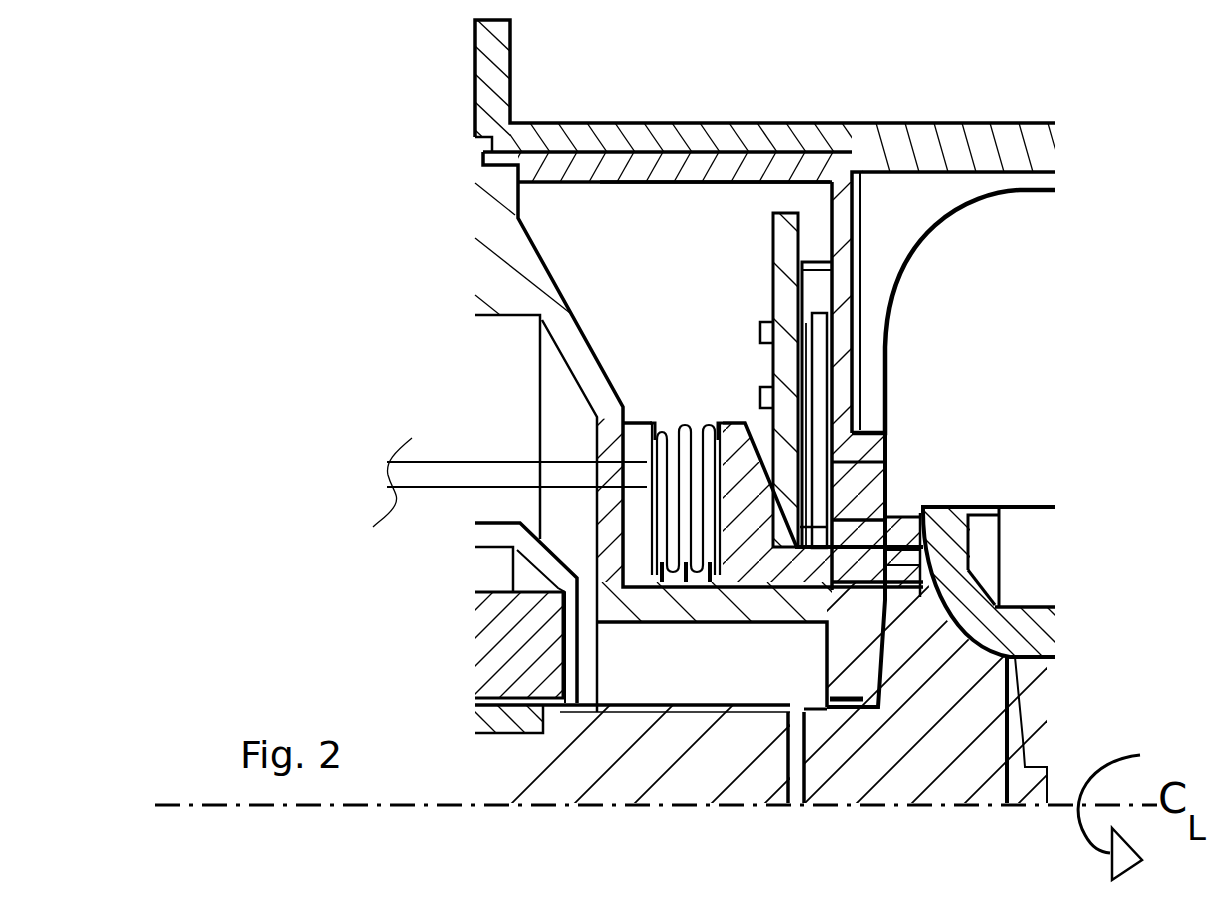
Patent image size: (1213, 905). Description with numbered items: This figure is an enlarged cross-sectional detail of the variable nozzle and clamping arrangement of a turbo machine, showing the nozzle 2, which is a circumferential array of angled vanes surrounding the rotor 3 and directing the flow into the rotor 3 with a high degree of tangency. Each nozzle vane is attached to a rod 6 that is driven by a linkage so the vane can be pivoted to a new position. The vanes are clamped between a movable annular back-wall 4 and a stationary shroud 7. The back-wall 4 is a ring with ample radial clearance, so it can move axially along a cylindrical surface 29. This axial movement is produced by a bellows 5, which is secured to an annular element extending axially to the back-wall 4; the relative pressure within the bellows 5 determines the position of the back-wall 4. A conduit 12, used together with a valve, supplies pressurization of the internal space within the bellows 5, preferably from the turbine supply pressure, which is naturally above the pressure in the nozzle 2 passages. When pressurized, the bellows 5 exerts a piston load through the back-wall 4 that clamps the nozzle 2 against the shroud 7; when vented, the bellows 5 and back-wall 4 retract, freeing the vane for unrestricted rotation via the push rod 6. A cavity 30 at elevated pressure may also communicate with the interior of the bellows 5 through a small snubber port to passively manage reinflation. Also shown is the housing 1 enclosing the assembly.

The housing 1 is at (920, 237).
The nozzle 2 is at (852, 565).
The rotor 3 is at (1023, 740).
The annular back-wall 4 is at (887, 470).
The bellows device 5 is at (685, 420).
The rod 6 is at (815, 543).
The stationary shroud 7 is at (963, 553).
The conduit 12 is at (463, 478).
The cylindrical surface 29 is at (882, 552).
The cavity 30 is at (680, 301).